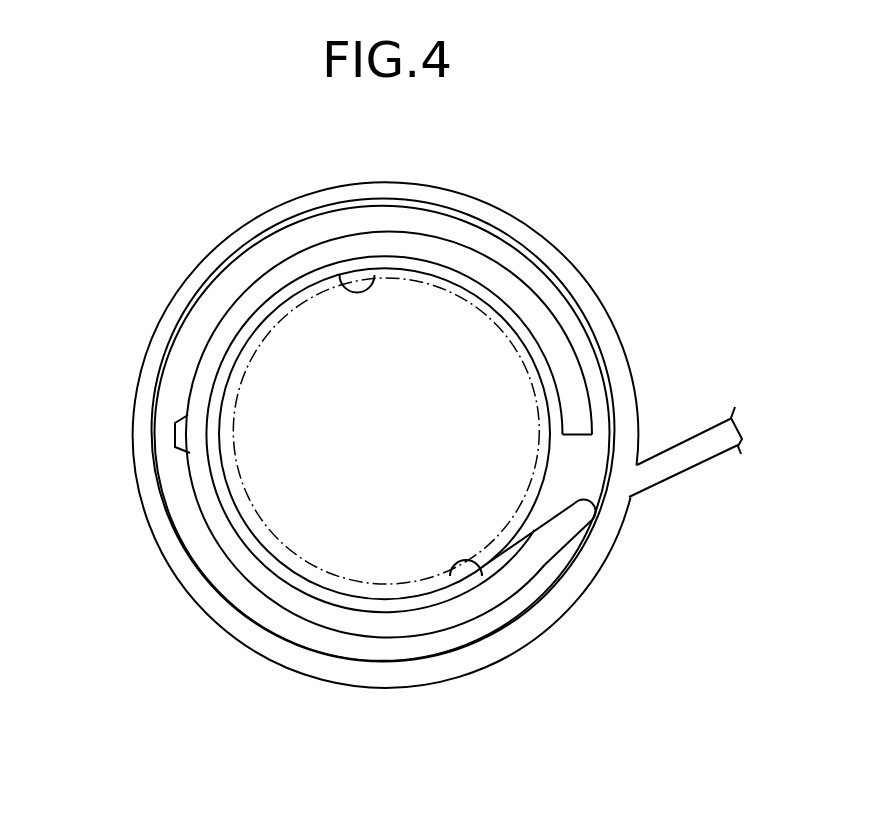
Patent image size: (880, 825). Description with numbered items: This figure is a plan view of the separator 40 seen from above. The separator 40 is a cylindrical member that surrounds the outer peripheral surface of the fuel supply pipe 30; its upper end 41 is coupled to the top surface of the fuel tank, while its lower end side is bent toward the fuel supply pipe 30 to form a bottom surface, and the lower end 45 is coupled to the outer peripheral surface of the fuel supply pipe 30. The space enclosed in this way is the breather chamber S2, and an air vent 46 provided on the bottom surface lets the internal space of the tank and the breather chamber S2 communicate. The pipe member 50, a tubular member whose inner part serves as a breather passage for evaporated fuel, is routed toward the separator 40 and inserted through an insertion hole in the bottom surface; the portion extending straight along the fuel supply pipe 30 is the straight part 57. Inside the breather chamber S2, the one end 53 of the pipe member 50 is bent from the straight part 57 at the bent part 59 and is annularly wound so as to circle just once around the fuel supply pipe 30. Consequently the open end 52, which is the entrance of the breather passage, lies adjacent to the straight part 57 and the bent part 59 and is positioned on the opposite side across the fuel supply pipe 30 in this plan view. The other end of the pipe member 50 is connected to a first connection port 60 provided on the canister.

The fuel supply pipe 30 is at (467, 580).
The separator 40 is at (562, 243).
The upper end 41 is at (209, 262).
The lower end 45 is at (341, 272).
The air vent 46 is at (183, 447).
The pipe member 50 is at (670, 430).
The open end 52 is at (592, 428).
The one end 53 is at (452, 242).
The straight part 57 is at (714, 425).
The bent part 59 is at (570, 523).
The first connection port 60 is at (583, 490).
The breather chamber S2 is at (268, 258).